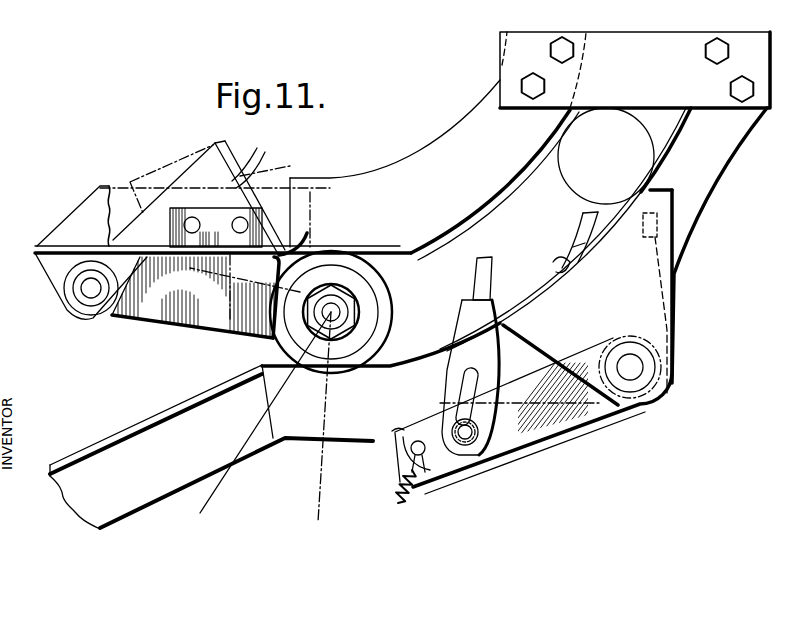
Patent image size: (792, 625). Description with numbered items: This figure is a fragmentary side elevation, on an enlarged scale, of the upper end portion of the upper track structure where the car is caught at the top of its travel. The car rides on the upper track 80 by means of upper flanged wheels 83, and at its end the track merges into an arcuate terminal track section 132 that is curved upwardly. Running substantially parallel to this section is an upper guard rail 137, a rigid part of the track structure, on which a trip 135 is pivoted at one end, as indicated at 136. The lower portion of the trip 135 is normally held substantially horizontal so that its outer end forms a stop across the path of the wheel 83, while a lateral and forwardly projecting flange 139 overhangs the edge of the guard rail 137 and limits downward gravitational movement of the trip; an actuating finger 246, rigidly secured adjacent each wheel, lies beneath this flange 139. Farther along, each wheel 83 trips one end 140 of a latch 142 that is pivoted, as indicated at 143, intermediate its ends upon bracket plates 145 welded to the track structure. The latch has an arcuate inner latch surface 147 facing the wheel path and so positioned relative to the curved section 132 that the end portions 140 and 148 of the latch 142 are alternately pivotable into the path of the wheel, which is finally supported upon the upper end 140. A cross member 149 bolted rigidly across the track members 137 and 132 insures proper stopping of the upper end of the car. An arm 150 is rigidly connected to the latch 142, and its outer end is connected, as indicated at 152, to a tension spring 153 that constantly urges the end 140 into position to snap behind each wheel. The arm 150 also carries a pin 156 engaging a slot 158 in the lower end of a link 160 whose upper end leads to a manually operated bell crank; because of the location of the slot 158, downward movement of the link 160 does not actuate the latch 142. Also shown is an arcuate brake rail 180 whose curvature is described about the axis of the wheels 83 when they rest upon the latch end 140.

The upper guard rail 137 is at (57, 247).
The trip pivot 136 is at (88, 287).
The trip 135 is at (160, 308).
The actuating finger 246 is at (231, 320).
The lateral and forwardly projecting flange 139 is at (292, 240).
The arcuate terminal track section 132 is at (417, 342).
The upper flanged wheel 83 is at (376, 307).
The brake rail 180 is at (163, 419).
The upper track 80 is at (253, 463).
The link 160 is at (477, 271).
The latch end portion 148 is at (393, 433).
The slot 158 is at (461, 385).
The pin 156 is at (477, 458).
The spring connection 152 is at (421, 458).
The tension spring 153 is at (395, 503).
The arm 150 is at (513, 440).
The latch pivot 143 is at (630, 367).
The bracket plates 145 is at (513, 360).
The inner latch surface 147 is at (571, 278).
The latch end 140 is at (580, 213).
The latch 142 is at (577, 242).
The cross member 149 is at (658, 45).